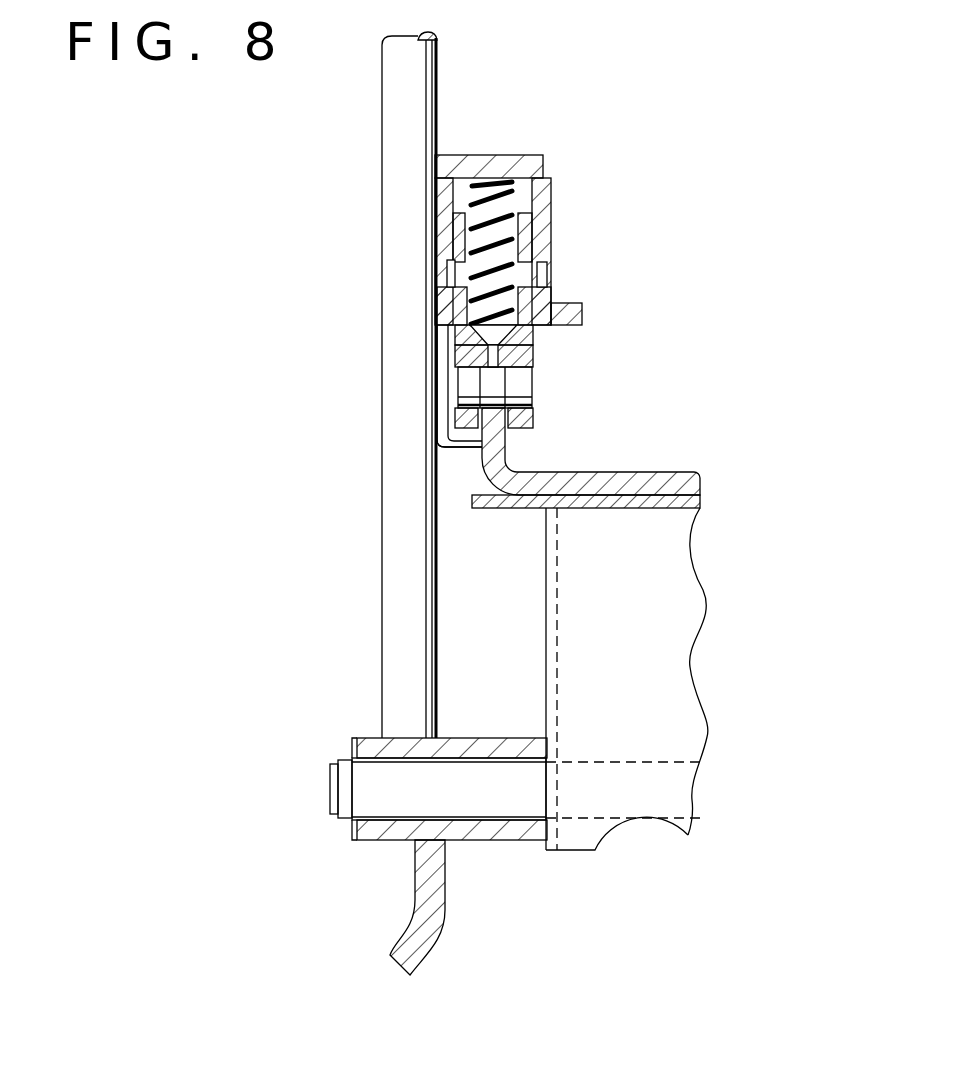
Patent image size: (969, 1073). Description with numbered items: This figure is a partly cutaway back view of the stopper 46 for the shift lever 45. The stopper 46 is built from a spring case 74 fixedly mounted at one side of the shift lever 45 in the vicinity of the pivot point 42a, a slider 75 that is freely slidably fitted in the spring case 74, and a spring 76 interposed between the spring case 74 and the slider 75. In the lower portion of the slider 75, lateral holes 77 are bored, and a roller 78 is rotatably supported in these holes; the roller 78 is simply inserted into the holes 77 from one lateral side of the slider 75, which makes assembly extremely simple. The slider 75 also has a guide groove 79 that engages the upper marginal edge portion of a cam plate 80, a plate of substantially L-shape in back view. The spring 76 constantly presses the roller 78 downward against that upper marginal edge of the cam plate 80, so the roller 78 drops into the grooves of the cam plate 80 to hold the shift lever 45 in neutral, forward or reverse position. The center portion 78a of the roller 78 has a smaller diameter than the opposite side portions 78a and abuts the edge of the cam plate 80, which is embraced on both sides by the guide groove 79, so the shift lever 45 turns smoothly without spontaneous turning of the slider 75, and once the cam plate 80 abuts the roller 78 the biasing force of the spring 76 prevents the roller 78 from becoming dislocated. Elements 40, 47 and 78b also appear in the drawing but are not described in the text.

The mounting bracket 40 is at (497, 510).
The pivot point 42a is at (372, 738).
The shift lever 45 is at (398, 76).
The stopper 46 is at (486, 146).
The arm 47 is at (445, 912).
The spring case 74 is at (552, 226).
The slider 75 is at (533, 350).
The spring 76 is at (496, 193).
The lateral holes 77 is at (533, 408).
The roller 78 is at (533, 385).
The center portion and opposite side portions of the roller 78a is at (447, 418).
The washer 78b is at (455, 348).
The guide groove 79 is at (510, 448).
The cam plate 80 is at (477, 466).